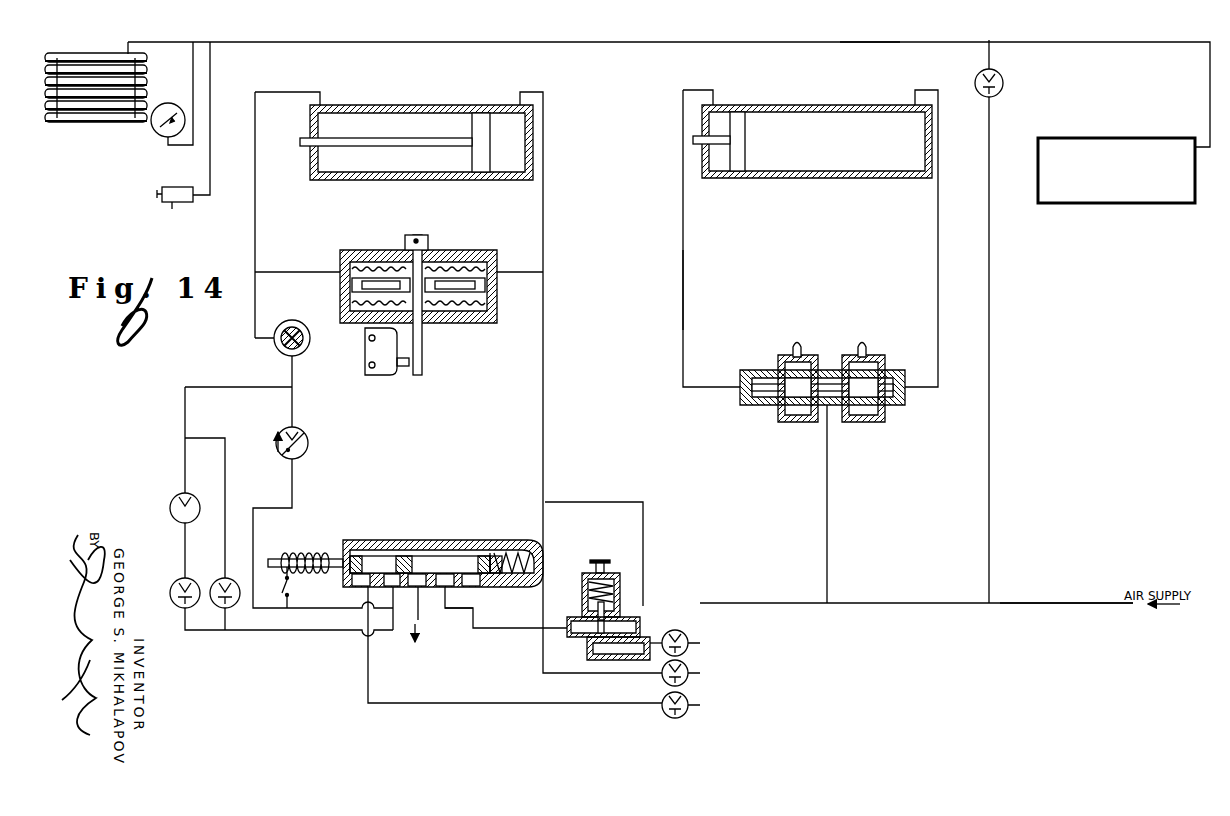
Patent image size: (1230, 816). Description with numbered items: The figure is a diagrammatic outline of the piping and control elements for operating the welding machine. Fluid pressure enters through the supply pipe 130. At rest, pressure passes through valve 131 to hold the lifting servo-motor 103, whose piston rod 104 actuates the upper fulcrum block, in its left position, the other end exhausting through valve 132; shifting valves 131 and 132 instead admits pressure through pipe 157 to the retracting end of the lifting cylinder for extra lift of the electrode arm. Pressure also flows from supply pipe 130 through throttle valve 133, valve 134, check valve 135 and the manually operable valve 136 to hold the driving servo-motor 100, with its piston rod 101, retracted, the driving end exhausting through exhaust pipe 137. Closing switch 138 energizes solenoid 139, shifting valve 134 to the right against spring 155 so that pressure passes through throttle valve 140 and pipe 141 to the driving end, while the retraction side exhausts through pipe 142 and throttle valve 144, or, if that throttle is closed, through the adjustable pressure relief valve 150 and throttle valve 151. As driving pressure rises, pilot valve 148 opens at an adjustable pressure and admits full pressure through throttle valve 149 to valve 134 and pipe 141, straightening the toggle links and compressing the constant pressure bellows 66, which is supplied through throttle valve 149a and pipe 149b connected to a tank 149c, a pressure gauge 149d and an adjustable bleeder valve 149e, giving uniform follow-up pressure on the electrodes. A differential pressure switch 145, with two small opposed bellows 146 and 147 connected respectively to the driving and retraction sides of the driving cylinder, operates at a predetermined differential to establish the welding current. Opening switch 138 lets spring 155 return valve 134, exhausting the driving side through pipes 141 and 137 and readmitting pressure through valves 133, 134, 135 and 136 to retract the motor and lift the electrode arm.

The constant pressure bellows 66 is at (147, 80).
The pressure gauge 149d is at (158, 137).
The adjustable bleeder valve 149e is at (166, 205).
The driving servo-motor 100 is at (415, 105).
The piston rod 101 is at (398, 138).
The lifting servo-motor 103 is at (850, 105).
The piston rod 104 is at (698, 140).
The throttle valve 149a is at (1003, 85).
The pipe 149b is at (862, 40).
The tank 149c is at (1082, 203).
The bellows 147 is at (356, 262).
The bellows 146 is at (438, 262).
The differential pressure switch 145 is at (392, 370).
The manually operable valve 136 is at (306, 346).
The pipe 157 is at (685, 298).
The valve 132 is at (785, 355).
The valve 131 is at (875, 422).
The pipe 142 is at (185, 432).
The check valve 135 is at (306, 440).
The adjustable pressure relief valve 150 is at (170, 503).
The throttle valve 151 is at (170, 588).
The throttle valve 144 is at (232, 582).
The solenoid 139 is at (312, 556).
The switch 138 is at (290, 590).
The valve 134 is at (418, 540).
The spring 155 is at (520, 540).
The pipe 141 is at (475, 612).
The exhaust pipe 137 is at (424, 625).
The pilot valve 148 is at (624, 604).
The throttle valve 149 is at (689, 608).
The throttle valve 140 is at (688, 678).
The throttle valve 133 is at (688, 712).
The supply pipe 130 is at (1075, 603).